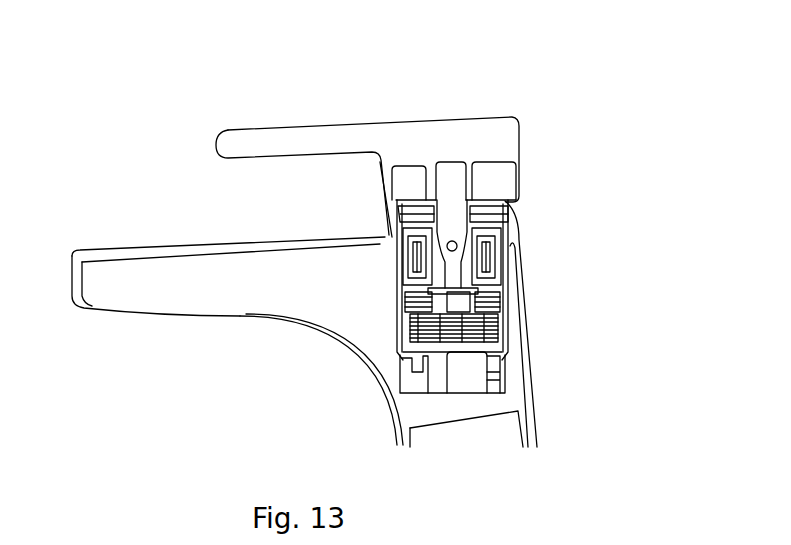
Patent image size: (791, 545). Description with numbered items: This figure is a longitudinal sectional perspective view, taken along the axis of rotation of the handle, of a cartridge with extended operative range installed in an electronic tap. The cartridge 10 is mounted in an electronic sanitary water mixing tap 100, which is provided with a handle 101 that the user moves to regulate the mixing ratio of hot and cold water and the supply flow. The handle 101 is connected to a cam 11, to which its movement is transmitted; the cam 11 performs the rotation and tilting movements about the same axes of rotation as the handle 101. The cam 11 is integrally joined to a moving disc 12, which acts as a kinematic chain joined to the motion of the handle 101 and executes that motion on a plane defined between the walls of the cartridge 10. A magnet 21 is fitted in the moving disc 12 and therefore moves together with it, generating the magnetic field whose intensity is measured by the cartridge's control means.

The electronic sanitary water mixing tap 100 is at (150, 116).
The handle 101 is at (430, 131).
The cam 11 is at (516, 198).
The cartridge 10 is at (500, 298).
The moving disc 12 is at (498, 287).
The magnet 21 is at (403, 350).